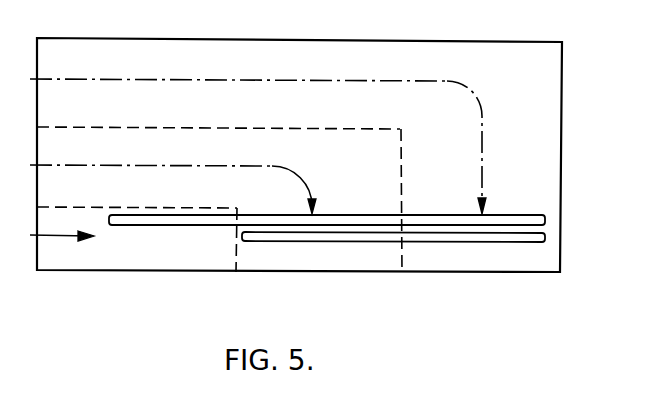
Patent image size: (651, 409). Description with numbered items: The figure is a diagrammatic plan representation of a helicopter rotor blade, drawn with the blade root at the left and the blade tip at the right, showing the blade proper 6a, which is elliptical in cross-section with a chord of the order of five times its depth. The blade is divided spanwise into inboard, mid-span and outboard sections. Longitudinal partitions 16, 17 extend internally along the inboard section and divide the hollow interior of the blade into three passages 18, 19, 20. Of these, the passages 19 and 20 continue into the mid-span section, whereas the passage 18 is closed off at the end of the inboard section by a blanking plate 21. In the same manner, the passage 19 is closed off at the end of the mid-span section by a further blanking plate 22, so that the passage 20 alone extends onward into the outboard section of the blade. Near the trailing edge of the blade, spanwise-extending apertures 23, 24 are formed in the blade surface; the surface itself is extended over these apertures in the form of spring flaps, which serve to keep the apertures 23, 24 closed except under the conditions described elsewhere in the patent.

The blade proper 6a is at (442, 28).
The longitudinal partition 16 is at (165, 125).
The longitudinal partition 17 is at (187, 192).
The passage 18 is at (107, 247).
The passage 19 is at (173, 189).
The passage 20 is at (258, 146).
The blanking plate 21 is at (233, 263).
The blanking plate 22 is at (400, 263).
The spanwise-extending aperture 23 is at (543, 220).
The spanwise-extending aperture 24 is at (543, 236).